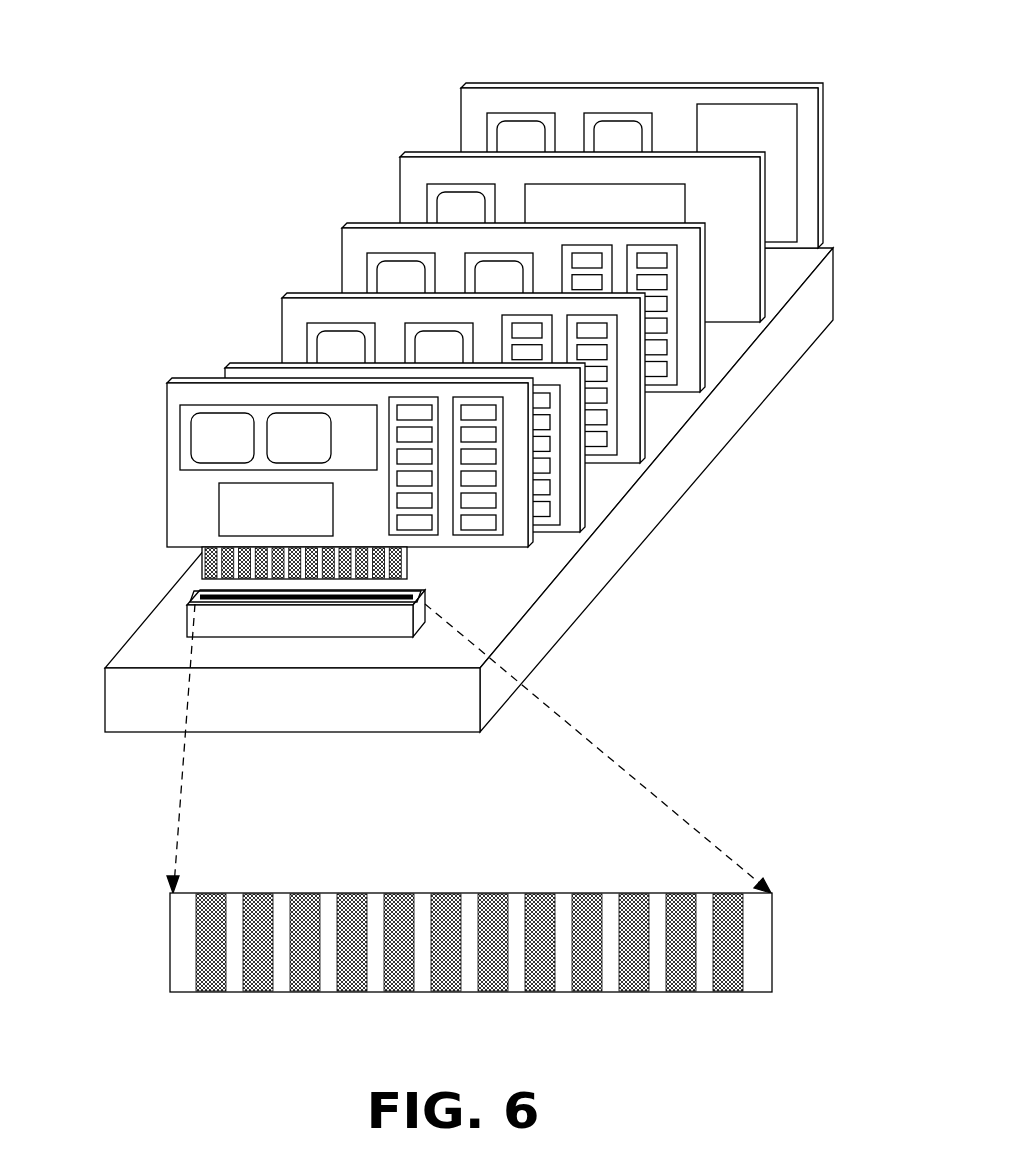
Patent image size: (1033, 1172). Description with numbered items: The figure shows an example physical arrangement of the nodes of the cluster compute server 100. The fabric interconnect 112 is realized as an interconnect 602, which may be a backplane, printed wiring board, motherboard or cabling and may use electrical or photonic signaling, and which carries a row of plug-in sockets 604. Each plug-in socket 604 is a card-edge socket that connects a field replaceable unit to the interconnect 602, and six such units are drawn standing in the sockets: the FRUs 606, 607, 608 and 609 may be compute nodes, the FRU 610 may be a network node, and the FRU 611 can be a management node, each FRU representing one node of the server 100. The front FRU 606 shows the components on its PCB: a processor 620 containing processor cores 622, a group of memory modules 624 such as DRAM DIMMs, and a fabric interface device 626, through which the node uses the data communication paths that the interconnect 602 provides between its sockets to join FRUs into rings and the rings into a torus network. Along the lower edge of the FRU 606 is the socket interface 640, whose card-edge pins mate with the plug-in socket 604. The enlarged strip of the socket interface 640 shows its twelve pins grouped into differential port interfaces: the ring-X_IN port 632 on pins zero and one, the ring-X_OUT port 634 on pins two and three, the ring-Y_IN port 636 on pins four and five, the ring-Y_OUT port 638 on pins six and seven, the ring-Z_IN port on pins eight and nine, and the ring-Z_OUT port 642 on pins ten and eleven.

The server 100 is at (228, 173).
The fabric interconnect 112 is at (144, 623).
The interconnect 602 is at (105, 706).
The plug-in socket 604 is at (187, 608).
The FRU 606 is at (303, 438).
The FRU 607 is at (225, 366).
The FRU 608 is at (282, 296).
The FRU 609 is at (342, 226).
The FRU 610 is at (401, 156).
The FRU 611 is at (462, 88).
The processor 620 is at (278, 437).
The processor core 622 is at (208, 447).
The memory module 624 is at (392, 527).
The fabric interface device 626 is at (219, 520).
The ring-X_IN port 632 is at (234, 955).
The ring-X_OUT port 634 is at (328, 955).
The ring-Y_IN port 636 is at (422, 955).
The ring-Y_OUT port 638 is at (516, 955).
The socket interface 640 is at (410, 576).
The ring-Z_OUT port 642 is at (704, 955).